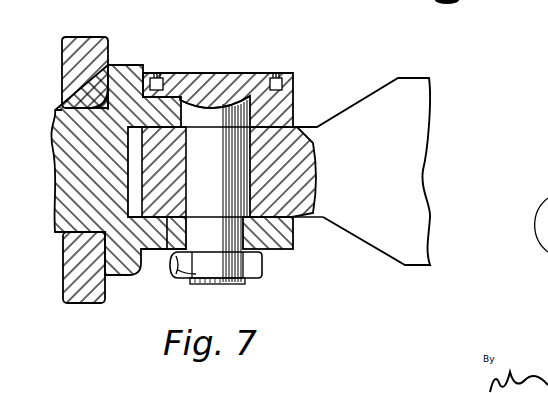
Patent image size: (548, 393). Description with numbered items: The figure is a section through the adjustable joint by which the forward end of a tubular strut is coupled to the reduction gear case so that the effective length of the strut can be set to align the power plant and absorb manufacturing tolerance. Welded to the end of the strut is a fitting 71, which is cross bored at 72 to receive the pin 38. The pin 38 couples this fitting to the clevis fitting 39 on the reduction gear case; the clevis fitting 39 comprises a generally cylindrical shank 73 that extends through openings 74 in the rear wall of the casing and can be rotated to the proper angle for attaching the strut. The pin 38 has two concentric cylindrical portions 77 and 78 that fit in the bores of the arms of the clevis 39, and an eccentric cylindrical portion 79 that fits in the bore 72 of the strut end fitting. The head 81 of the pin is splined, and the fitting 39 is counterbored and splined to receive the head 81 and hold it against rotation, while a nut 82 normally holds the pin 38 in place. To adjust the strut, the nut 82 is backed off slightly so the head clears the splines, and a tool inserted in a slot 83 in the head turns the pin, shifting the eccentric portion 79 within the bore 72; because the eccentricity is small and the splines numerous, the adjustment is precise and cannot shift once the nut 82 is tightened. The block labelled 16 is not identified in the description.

The mounting block 16 is at (76, 40).
The clevis fitting 39 is at (118, 64).
The openings 74 is at (57, 112).
The shank 73 is at (64, 212).
The eccentric cylindrical portion 79 is at (167, 248).
The pin 38 is at (243, 84).
The head 81 is at (160, 73).
The slot 83 is at (200, 73).
The concentric cylindrical portion 77 is at (240, 111).
The cross bore 72 is at (245, 162).
The concentric cylindrical portion 78 is at (262, 240).
The nut 82 is at (250, 268).
The fitting 71 is at (362, 112).